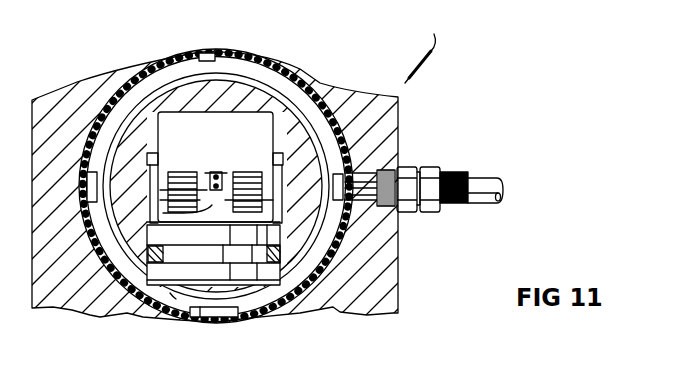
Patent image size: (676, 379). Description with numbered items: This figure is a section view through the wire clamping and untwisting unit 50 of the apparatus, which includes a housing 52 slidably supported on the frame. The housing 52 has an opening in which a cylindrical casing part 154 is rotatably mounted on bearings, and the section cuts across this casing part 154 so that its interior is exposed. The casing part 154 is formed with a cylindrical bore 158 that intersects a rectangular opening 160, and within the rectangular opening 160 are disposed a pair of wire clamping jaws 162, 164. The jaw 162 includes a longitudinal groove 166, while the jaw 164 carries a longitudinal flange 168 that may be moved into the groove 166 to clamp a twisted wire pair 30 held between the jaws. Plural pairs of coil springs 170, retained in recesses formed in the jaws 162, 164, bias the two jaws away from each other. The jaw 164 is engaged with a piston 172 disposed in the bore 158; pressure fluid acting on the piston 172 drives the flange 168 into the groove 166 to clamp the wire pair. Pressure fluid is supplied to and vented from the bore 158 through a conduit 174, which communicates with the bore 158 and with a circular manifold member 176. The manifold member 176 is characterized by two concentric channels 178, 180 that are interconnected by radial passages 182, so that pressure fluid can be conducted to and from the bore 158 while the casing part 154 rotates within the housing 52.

The sensor unit 30 is at (224, 172).
The wire clamping and untwisting unit 50 is at (420, 58).
The housing 52 is at (388, 278).
The cylindrical casing part 154 is at (247, 88).
The cylindrical bore 158 is at (280, 235).
The rectangular opening 160 is at (271, 152).
The wire clamping jaw 162 is at (165, 135).
The wire clamping jaw 164 is at (225, 228).
The longitudinal groove 166 is at (210, 174).
The longitudinal flange 168 is at (163, 213).
The coil springs 170 is at (173, 190).
The piston 172 is at (240, 268).
The conduit 174 is at (487, 183).
The circular manifold member 176 is at (292, 290).
The concentric channel 178 is at (173, 295).
The concentric channel 180 is at (147, 300).
The radial passages 182 is at (214, 60).